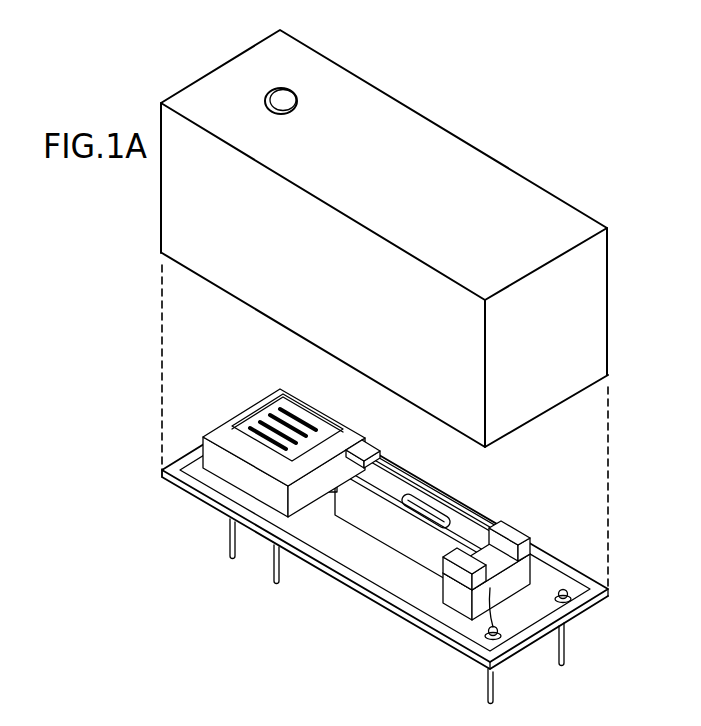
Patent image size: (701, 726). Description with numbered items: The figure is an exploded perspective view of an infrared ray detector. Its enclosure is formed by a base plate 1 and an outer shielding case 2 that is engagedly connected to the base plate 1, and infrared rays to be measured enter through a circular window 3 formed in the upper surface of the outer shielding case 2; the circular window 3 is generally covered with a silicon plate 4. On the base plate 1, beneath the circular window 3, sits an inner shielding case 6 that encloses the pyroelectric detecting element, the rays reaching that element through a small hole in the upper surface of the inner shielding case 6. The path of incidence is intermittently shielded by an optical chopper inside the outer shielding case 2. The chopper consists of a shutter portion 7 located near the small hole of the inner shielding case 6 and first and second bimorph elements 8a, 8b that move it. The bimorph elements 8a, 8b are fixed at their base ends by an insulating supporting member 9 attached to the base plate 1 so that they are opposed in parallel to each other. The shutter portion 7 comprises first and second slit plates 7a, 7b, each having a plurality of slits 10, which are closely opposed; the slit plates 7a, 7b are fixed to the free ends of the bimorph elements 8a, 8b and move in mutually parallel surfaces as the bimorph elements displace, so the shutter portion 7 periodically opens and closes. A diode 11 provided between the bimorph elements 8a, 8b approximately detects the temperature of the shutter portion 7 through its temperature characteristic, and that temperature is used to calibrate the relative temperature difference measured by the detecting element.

The base plate 1 is at (413, 593).
The outer shielding case 2 is at (402, 300).
The circular window 3 is at (284, 87).
The silicon plate 4 is at (283, 104).
The inner shielding case 6 is at (286, 451).
The shutter portion 7 is at (306, 414).
The first slit plate 7a is at (287, 413).
The second slit plate 7b is at (348, 440).
The first bimorph element 8a is at (373, 520).
The second bimorph element 8b is at (473, 523).
The insulating supporting member 9 is at (507, 598).
The slits 10 is at (280, 409).
The diode 11 is at (421, 497).